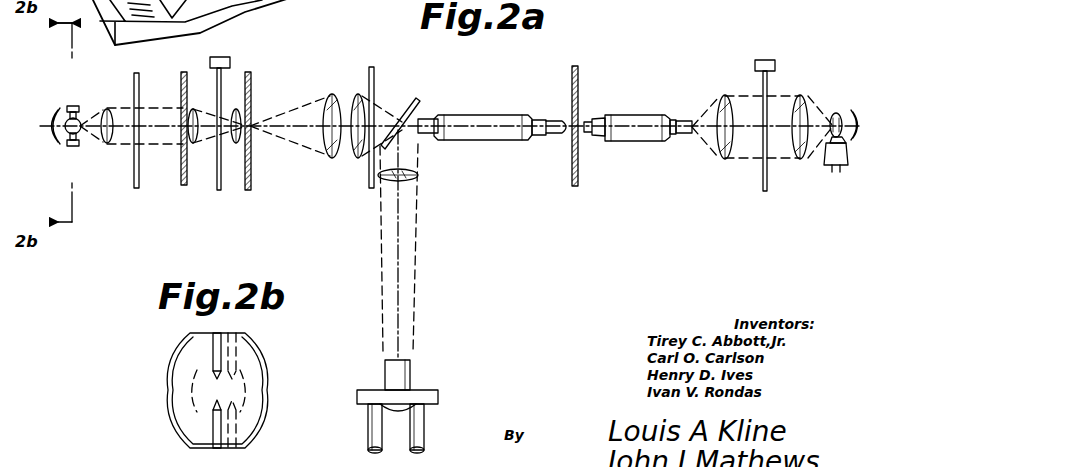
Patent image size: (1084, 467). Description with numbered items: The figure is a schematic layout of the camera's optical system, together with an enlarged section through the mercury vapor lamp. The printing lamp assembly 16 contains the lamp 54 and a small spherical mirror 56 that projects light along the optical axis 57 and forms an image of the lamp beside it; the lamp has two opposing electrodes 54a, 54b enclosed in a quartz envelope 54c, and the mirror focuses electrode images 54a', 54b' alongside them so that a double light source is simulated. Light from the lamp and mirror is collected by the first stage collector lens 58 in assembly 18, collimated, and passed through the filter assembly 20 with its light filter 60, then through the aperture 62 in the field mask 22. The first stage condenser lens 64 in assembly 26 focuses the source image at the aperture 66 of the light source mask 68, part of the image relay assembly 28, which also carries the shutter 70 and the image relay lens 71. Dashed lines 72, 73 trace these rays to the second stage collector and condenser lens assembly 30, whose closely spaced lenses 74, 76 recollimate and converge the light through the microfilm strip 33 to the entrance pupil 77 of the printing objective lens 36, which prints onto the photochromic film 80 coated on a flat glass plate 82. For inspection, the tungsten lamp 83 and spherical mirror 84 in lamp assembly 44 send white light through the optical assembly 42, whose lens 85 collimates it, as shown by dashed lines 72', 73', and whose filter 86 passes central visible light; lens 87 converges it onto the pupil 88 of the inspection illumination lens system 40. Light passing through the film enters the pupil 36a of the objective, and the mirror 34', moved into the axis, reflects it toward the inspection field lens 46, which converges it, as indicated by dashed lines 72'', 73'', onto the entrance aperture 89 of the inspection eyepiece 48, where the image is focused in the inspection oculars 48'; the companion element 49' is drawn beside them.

In FIG. 2a, the printing lamp assembly 16 is at (70, 147).
In FIG. 2a, the assembly 18 is at (102, 144).
In FIG. 2a, the filter assembly 20 is at (125, 153).
In FIG. 2a, the field mask 22 is at (184, 72).
In FIG. 2a, the assembly 26 is at (194, 144).
In FIG. 2a, the image relay assembly 28 is at (233, 176).
In FIG. 2a, the second stage collector and condenser lens assembly 30 is at (345, 163).
In FIG. 2a, the microfilm strip 33 is at (373, 67).
In FIG. 2a, the mirror 34' is at (402, 117).
In FIG. 2a, the printing objective lens 36 is at (497, 116).
In FIG. 2a, the pupil 36a is at (560, 121).
In FIG. 2a, the inspection illumination lens system 40 is at (647, 116).
In FIG. 2a, the optical assembly 42 is at (748, 175).
In FIG. 2a, the lamp assembly 44 is at (846, 172).
In FIG. 2a, the inspection field lens 46 is at (416, 178).
In FIG. 2a, the inspection eyepiece 48 is at (379, 395).
In FIG. 2a, the inspection oculars 48' is at (353, 435).
In FIG. 2a, the cylinder 49' is at (438, 435).
In FIG. 2a, the lamp 54 is at (76, 106).
In FIG. 2b, the electrode 54a is at (180, 356).
In FIG. 2b, the electrode image 54a' is at (271, 356).
In FIG. 2b, the electrode 54b is at (182, 424).
In FIG. 2b, the electrode image 54b' is at (271, 424).
In FIG. 2b, the quartz envelope 54c is at (168, 388).
In FIG. 2a, the spherical mirror 56 is at (56, 112).
In FIG. 2a, the optical axis 57 is at (155, 130).
In FIG. 2a, the first stage collector lens 58 is at (107, 109).
In FIG. 2a, the light filter 60 is at (136, 73).
In FIG. 2a, the aperture 62 is at (181, 108).
In FIG. 2a, the first stage condenser lens 64 is at (194, 109).
In FIG. 2a, the aperture 66 is at (250, 124).
In FIG. 2a, the light source mask 68 is at (248, 72).
In FIG. 2a, the shutter 70 is at (219, 57).
In FIG. 2a, the image relay lens 71 is at (236, 110).
In FIG. 2a, the dashed line 72 is at (99, 83).
In FIG. 2a, the dashed line 72' is at (793, 69).
In FIG. 2a, the dashed line 72'' is at (367, 269).
In FIG. 2a, the dashed line 73 is at (89, 171).
In FIG. 2a, the dashed line 73' is at (792, 178).
In FIG. 2a, the dashed line 73'' is at (428, 269).
In FIG. 2a, the lens 74 is at (330, 96).
In FIG. 2a, the lens 76 is at (358, 96).
In FIG. 2a, the entrance pupil 77 is at (414, 118).
In FIG. 2a, the photochromic film 80 is at (574, 67).
In FIG. 2a, the flat glass plate 82 is at (580, 70).
In FIG. 2a, the tungsten lamp 83 is at (832, 114).
In FIG. 2a, the spherical mirror 84 is at (851, 111).
In FIG. 2a, the lens 85 is at (801, 99).
In FIG. 2a, the filter 86 is at (775, 50).
In FIG. 2a, the lens 87 is at (718, 101).
In FIG. 2a, the pupil 88 is at (687, 121).
In FIG. 2a, the entrance aperture 89 is at (411, 371).